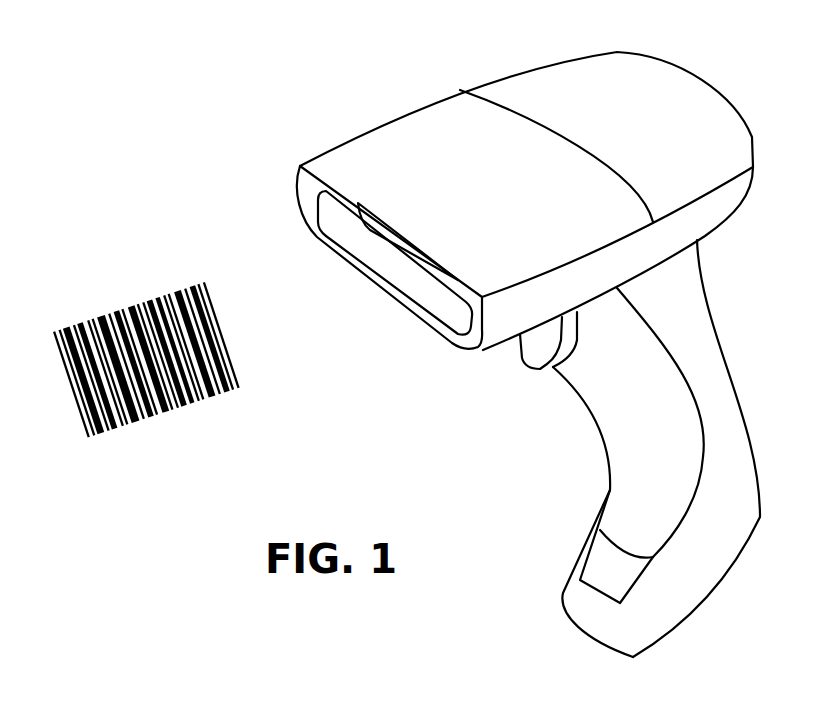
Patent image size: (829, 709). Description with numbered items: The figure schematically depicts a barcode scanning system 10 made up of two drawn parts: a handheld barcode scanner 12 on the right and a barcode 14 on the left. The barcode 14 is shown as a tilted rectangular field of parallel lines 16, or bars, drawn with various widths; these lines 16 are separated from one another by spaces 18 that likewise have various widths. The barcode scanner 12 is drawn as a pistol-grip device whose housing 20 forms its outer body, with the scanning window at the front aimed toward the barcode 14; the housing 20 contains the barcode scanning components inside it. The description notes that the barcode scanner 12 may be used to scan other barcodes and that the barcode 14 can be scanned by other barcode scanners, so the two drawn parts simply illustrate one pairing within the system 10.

The barcode scanning system 10 is at (155, 155).
The barcode scanner 12 is at (382, 121).
The barcode 14 is at (170, 412).
The parallel lines 16 is at (108, 315).
The spaces 18 is at (137, 305).
The housing 20 is at (562, 102).